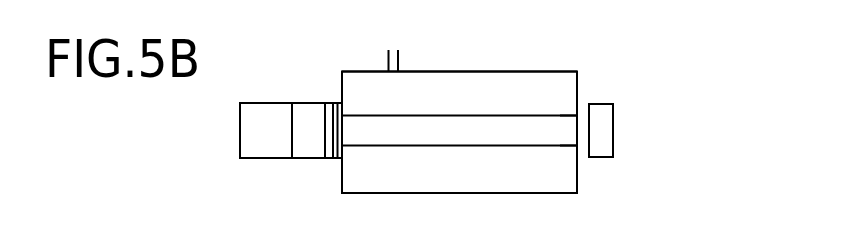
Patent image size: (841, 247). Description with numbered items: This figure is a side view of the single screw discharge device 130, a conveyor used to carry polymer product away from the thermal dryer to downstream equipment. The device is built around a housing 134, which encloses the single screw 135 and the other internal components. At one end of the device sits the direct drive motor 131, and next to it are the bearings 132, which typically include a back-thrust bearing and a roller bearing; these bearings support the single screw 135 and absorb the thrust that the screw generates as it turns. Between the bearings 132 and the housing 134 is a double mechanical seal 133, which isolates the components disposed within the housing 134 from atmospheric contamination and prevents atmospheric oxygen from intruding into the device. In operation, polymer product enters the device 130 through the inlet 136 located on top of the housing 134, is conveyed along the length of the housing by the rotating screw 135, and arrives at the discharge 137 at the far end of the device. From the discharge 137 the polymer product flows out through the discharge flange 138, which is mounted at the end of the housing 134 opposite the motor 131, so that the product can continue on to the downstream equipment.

The single screw discharge device 130 is at (362, 71).
The direct drive motor 131 is at (267, 103).
The bearings 132 is at (306, 103).
The double mechanical seal 133 is at (336, 162).
The housing 134 is at (527, 72).
The single screw 135 is at (533, 147).
The inlet 136 is at (399, 60).
The discharge 137 is at (573, 128).
The discharge flange 138 is at (607, 121).